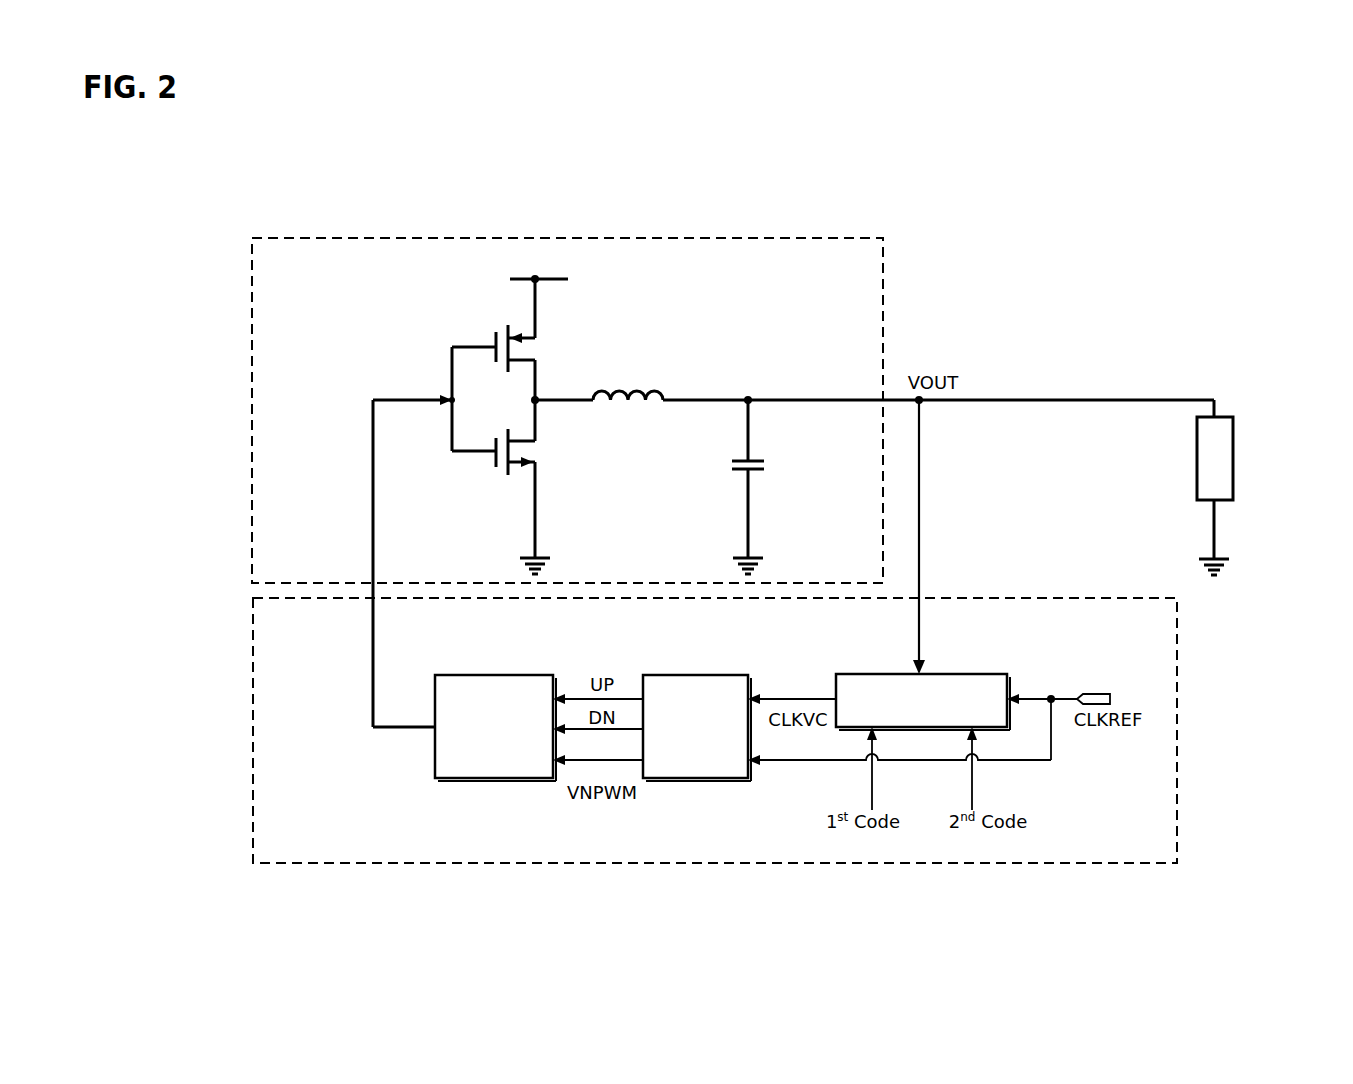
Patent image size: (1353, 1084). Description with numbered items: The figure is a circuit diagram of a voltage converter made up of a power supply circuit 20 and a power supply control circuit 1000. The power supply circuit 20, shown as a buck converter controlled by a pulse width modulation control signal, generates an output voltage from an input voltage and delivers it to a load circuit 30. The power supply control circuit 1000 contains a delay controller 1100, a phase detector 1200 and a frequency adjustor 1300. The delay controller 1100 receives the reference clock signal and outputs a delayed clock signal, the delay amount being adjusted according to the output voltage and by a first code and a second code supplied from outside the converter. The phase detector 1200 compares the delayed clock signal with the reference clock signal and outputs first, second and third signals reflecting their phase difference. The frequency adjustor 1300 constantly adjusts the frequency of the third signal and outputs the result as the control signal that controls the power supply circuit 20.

The power supply circuit 20 is at (247, 313).
The load circuit 30 is at (1235, 420).
The power supply control circuit 1000 is at (250, 700).
The delay controller 1100 is at (887, 673).
The phase detector 1200 is at (702, 673).
The frequency adjustor 1300 is at (503, 673).